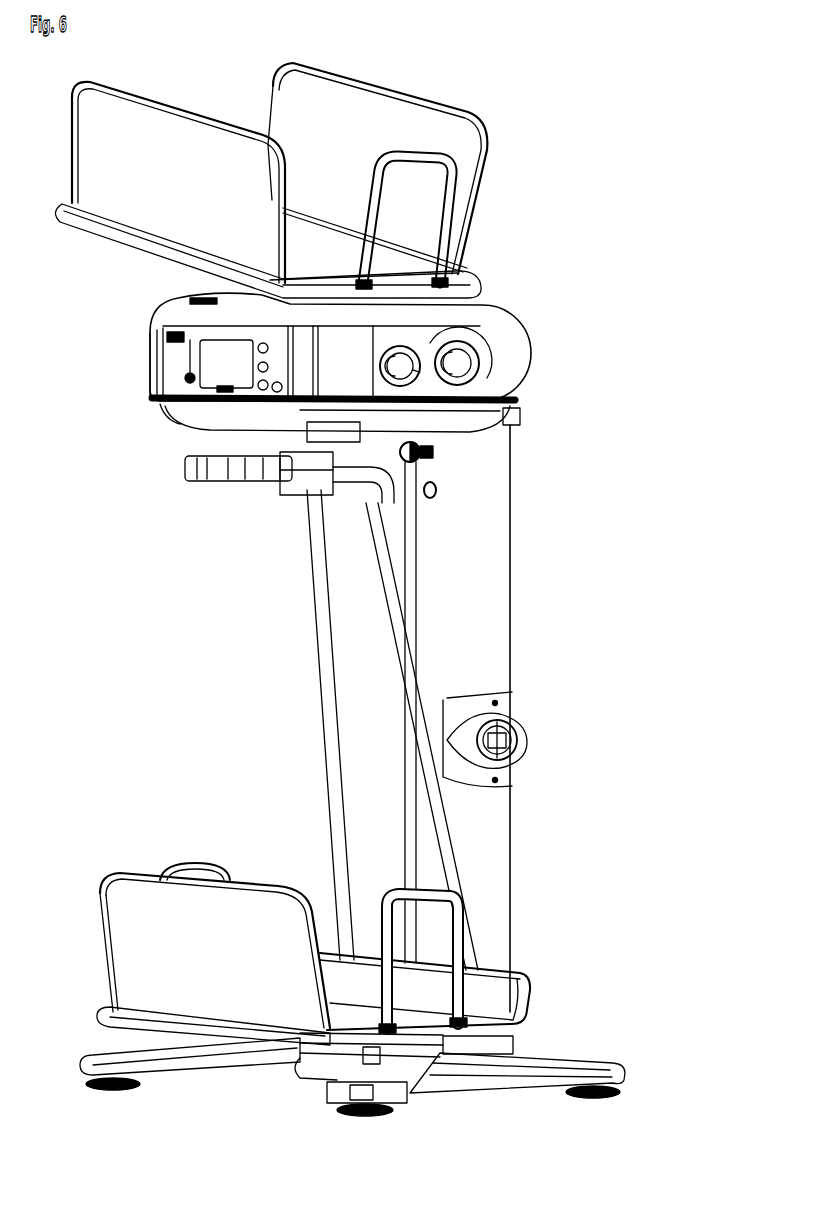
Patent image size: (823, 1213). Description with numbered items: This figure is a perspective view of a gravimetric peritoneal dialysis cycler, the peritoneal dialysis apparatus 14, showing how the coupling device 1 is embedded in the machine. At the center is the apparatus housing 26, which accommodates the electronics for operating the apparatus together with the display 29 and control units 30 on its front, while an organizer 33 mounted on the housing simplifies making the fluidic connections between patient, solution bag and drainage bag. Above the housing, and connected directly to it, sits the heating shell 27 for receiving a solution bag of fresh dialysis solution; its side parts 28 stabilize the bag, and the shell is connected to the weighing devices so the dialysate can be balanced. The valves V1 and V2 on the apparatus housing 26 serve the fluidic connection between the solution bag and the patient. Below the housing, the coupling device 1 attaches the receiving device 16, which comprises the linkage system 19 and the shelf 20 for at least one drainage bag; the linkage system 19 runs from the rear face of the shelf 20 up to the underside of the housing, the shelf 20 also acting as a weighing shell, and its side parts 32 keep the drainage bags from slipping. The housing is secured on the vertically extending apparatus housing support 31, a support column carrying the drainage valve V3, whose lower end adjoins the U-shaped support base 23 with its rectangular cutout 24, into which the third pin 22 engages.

The peritoneal dialysis apparatus 14 is at (742, 116).
The side parts 28 is at (138, 133).
The heating shell 27 is at (125, 243).
The apparatus housing 26 is at (167, 308).
The display 29 is at (213, 362).
The control units 30 is at (178, 414).
The organizer 33 is at (183, 462).
The valve V2 is at (493, 360).
The valve V1 is at (480, 390).
The coupling device 1 is at (433, 452).
The receiving device 16 is at (380, 492).
The linkage system 19 is at (397, 647).
The apparatus housing support 31 is at (486, 653).
The drainage valve V3 is at (530, 735).
The side parts 32 is at (203, 863).
The shelf 20 is at (100, 1013).
The support base 23 is at (577, 1055).
The rectangular cutout 24 is at (317, 1067).
The third pin 22 is at (380, 1053).